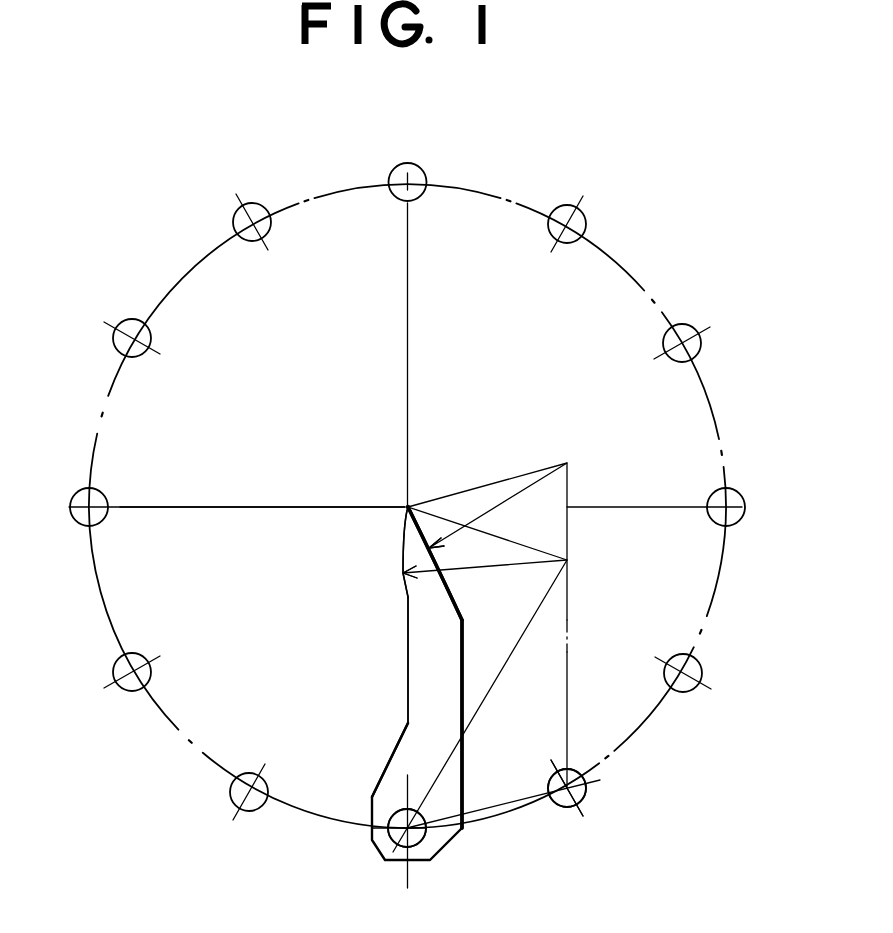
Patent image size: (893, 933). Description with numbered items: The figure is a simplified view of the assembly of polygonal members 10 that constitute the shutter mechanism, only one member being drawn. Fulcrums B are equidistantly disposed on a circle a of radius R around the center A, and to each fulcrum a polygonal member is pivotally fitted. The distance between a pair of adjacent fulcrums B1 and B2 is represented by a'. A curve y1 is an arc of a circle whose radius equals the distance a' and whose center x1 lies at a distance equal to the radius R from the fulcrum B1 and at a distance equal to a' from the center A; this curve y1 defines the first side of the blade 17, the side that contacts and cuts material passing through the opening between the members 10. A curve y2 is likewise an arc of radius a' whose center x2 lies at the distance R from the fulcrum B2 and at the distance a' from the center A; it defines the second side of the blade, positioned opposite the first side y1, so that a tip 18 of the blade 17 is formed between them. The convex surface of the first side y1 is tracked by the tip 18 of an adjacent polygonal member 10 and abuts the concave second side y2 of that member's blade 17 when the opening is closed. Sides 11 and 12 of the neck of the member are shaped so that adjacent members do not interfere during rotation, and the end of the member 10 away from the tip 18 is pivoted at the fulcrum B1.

The polygonal member 10 is at (421, 862).
The side of the neck 11 is at (403, 725).
The side of the neck 12 is at (450, 690).
The blade 17 is at (400, 573).
The tip 18 is at (405, 505).
The center A is at (414, 506).
The fulcrums B is at (83, 513).
The fulcrum B1 is at (393, 860).
The fulcrum B2 is at (583, 797).
The radius R is at (190, 507).
The pitch circle a is at (432, 506).
The distance between adjacent fulcrums a' is at (503, 699).
The center of curve y1 x1 is at (567, 560).
The center of curve y2 x2 is at (567, 463).
The curve (first side of the blade) y1 is at (405, 580).
The curve (second side of the blade) y2 is at (405, 546).